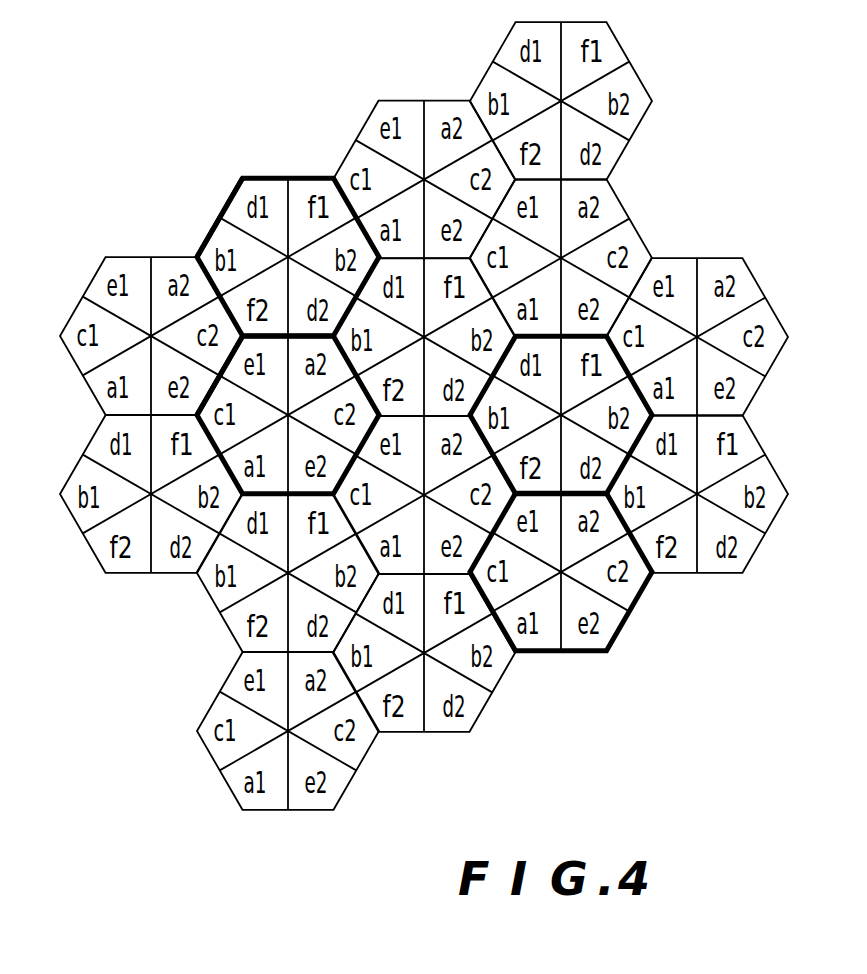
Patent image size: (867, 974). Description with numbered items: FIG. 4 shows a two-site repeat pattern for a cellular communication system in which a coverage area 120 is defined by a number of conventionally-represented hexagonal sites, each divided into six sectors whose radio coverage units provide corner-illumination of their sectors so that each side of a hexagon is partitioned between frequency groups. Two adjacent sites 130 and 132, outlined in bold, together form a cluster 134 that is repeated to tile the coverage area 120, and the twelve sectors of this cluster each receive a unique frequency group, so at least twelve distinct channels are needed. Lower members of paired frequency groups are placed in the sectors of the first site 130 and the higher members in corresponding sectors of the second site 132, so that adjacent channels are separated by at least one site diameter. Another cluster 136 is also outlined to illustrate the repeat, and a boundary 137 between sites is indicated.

The coverage area 120 is at (166, 30).
The first site 130 is at (270, 188).
The second site 132 is at (245, 502).
The cluster 134 is at (222, 238).
The another cluster 136 is at (615, 638).
The cell boundary 137 is at (240, 361).